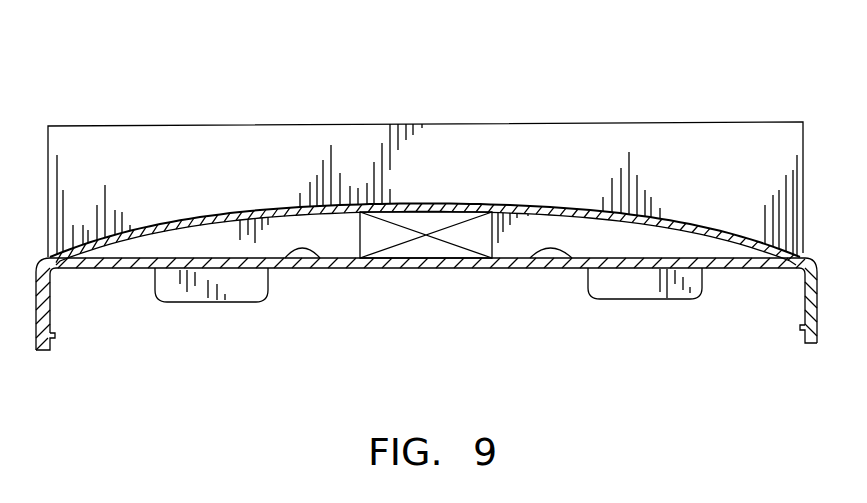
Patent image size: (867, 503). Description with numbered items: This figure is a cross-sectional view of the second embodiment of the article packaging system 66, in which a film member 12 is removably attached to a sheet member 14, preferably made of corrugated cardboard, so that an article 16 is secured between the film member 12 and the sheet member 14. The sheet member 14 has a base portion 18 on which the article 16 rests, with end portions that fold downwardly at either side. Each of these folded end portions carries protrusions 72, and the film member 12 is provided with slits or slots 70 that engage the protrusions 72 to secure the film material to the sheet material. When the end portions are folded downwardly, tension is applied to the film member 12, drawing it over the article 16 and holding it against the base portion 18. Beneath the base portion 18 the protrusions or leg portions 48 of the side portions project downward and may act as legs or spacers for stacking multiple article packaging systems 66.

The article packaging system 66 is at (222, 102).
The film member 12 is at (555, 205).
The sheet member 14 is at (453, 268).
The article 16 is at (413, 242).
The base portion 18 is at (323, 268).
The protrusion or leg portion 48 is at (190, 303).
The slits or slots 70 is at (60, 316).
The protrusions 72 is at (45, 352).